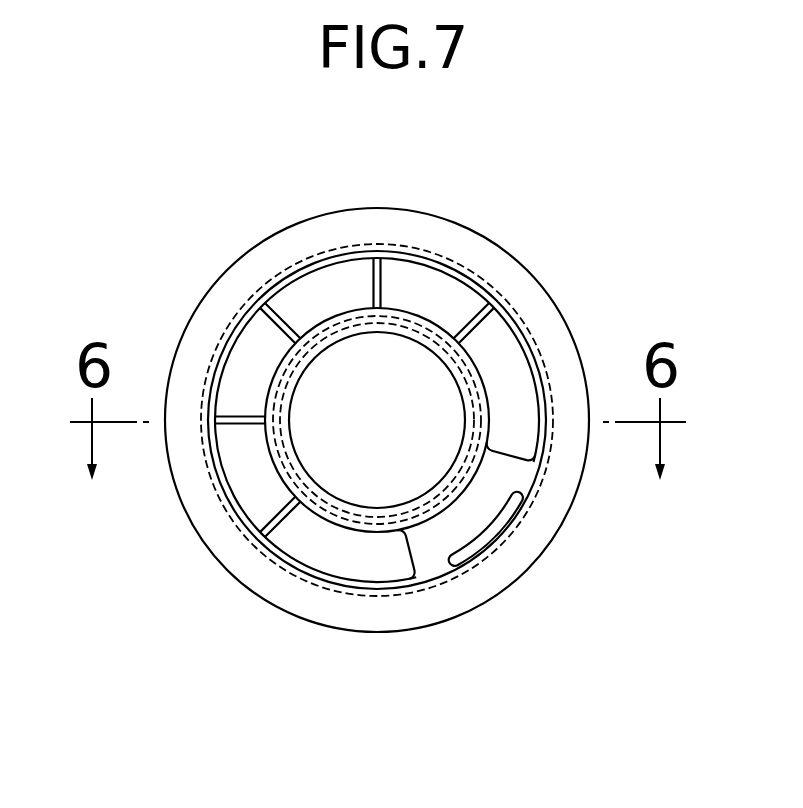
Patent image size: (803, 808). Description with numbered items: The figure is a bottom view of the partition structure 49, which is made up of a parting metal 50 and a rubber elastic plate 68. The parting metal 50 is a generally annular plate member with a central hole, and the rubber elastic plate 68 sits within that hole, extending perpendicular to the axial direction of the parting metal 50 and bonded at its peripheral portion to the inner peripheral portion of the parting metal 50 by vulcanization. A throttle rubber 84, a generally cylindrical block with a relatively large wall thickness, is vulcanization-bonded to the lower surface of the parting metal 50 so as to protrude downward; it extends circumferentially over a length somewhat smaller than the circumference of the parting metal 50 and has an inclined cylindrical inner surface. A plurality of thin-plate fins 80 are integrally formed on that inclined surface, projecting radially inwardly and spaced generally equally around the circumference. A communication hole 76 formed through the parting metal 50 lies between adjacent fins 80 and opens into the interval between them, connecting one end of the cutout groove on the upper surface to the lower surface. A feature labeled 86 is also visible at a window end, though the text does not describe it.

The partition structure 49 is at (482, 203).
The parting metal 50 is at (508, 275).
The rubber elastic plate 68 is at (377, 432).
The communication hole 76 is at (502, 507).
The fins 80 is at (377, 290).
The throttle rubber 84 is at (318, 293).
The bottom opening 86 is at (412, 545).